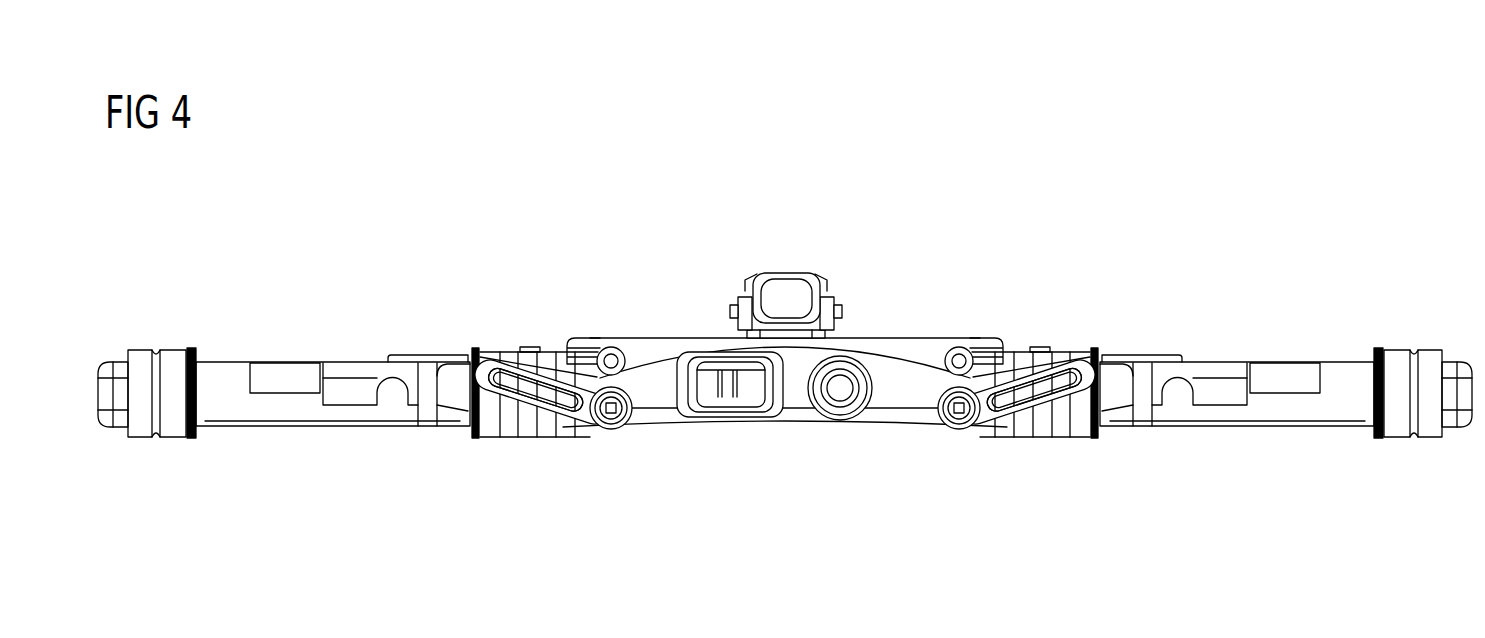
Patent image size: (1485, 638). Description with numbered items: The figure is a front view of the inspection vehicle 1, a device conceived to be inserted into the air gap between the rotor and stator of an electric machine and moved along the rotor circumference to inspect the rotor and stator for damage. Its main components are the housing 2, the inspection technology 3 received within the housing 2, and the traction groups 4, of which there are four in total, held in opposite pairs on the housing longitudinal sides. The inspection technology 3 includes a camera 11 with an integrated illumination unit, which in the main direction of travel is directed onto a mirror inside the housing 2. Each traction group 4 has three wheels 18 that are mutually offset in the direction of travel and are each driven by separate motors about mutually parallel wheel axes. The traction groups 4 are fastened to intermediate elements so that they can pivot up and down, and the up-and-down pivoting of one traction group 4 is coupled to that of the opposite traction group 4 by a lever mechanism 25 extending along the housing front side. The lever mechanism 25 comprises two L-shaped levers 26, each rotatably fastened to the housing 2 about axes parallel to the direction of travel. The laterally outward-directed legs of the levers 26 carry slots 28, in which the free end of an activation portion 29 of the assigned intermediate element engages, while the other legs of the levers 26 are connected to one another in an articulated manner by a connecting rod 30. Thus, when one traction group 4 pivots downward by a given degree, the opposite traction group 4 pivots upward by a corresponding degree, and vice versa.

The inspection vehicle 1 is at (1033, 174).
The housing 2 is at (884, 318).
The inspection technology 3 is at (800, 247).
The traction group 4 is at (296, 340).
The camera 11 is at (767, 272).
The wheel 18 is at (176, 358).
The lever mechanism 25 is at (797, 450).
The L-shaped lever 26 is at (553, 362).
The slot 28 is at (497, 382).
The activation portion 29 is at (547, 402).
The connecting rod 30 is at (653, 352).